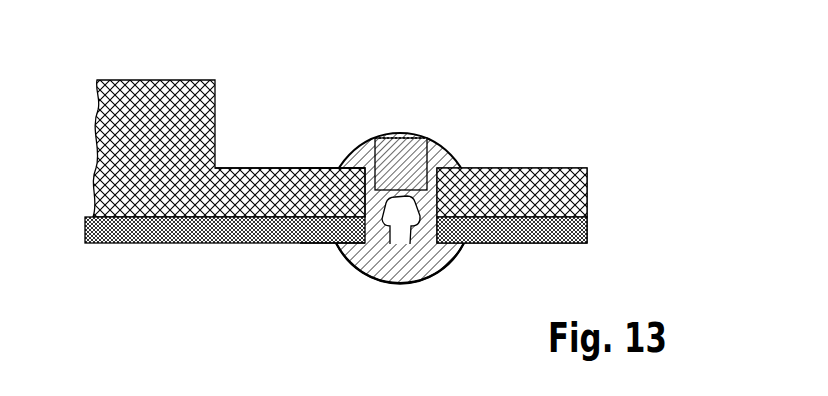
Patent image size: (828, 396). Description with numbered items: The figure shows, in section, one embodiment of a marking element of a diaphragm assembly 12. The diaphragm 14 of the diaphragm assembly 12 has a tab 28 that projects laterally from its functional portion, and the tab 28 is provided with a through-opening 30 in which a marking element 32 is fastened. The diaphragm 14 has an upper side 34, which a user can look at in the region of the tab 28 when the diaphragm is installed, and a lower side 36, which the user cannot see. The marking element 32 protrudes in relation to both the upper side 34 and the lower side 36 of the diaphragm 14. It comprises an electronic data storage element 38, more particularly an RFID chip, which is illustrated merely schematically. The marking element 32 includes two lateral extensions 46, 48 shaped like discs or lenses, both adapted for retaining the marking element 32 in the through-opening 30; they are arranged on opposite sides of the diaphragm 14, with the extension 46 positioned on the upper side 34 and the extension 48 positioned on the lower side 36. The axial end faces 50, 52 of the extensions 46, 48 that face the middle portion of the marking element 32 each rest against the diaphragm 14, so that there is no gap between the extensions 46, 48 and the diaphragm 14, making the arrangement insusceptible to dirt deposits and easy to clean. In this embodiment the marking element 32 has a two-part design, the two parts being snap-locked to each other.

The diaphragm assembly 12 is at (374, 172).
The diaphragm 14 is at (192, 97).
The tab 28 is at (550, 184).
The through-opening 30 is at (442, 190).
The marking element 32 is at (417, 115).
The upper side 34 is at (270, 168).
The lower side 36 is at (252, 245).
The electronic data storage element 38 is at (388, 140).
The lateral extension 46 is at (434, 148).
The lateral extension 48 is at (442, 258).
The axial end face 50 is at (337, 178).
The axial end face 52 is at (323, 236).